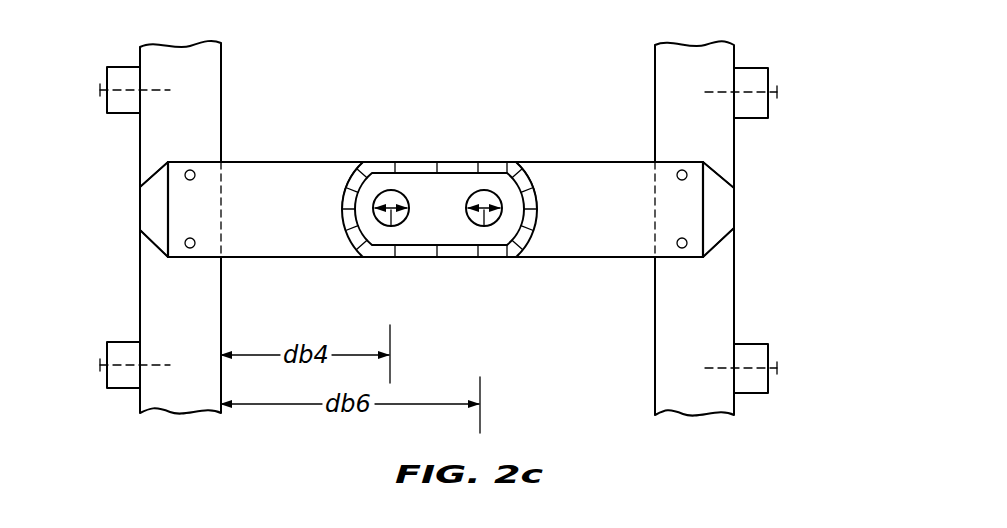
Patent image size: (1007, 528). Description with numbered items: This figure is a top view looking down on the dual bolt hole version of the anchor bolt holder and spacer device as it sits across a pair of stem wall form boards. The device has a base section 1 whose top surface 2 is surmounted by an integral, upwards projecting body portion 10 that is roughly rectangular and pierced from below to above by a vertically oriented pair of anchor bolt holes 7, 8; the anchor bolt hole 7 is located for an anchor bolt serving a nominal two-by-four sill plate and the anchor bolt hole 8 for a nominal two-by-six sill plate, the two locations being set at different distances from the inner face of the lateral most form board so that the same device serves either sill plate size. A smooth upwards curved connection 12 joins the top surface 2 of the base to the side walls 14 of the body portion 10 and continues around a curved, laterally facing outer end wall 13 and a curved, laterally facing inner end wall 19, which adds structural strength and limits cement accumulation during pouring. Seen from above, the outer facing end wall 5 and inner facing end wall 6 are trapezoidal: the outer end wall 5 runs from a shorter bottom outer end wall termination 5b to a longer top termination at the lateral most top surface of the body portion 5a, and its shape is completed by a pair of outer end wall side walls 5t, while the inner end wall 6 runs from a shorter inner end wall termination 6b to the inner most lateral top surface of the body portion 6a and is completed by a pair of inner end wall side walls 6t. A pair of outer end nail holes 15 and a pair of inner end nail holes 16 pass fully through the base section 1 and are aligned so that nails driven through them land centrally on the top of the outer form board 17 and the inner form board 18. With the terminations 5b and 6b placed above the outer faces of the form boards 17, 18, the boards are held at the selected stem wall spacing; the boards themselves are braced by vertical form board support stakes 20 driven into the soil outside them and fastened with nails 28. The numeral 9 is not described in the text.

The base section 1 is at (555, 295).
The top surface 2 is at (564, 180).
The outer facing end wall 5 is at (160, 213).
The lateral most top surface of the body portion 5a is at (177, 168).
The outer end wall termination 5b is at (139, 215).
The outer end wall side walls 5t is at (150, 165).
The inner facing end wall 6 is at (713, 215).
The inner most lateral top surface of the body portion 6a is at (697, 170).
The inner end wall termination 6b is at (736, 218).
The inner end wall side walls 6t is at (724, 172).
The anchor bolt hole 7 is at (393, 187).
The anchor bolt hole 8 is at (483, 187).
The opening axes 9 is at (484, 211).
The body portion 10 is at (482, 262).
The smooth upwards curved connection 12 is at (357, 173).
The curved, laterally facing outer end wall 13 is at (346, 208).
The side walls 14 is at (418, 170).
The outer end nail holes 15 is at (207, 176).
The inner end nail holes 16 is at (671, 177).
The outer form board 17 is at (200, 321).
The inner form board 18 is at (685, 308).
The curved, laterally facing inner end wall 19 is at (523, 206).
The form board support stakes 20 is at (124, 78).
The nails 28 is at (99, 365).